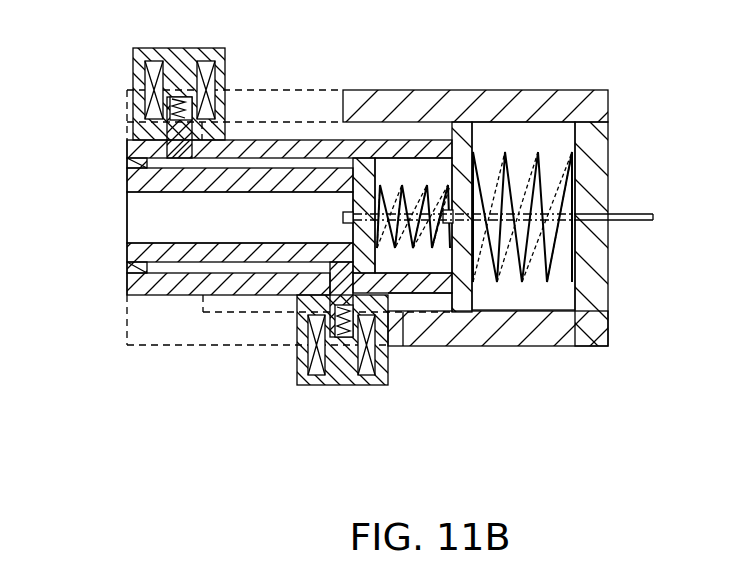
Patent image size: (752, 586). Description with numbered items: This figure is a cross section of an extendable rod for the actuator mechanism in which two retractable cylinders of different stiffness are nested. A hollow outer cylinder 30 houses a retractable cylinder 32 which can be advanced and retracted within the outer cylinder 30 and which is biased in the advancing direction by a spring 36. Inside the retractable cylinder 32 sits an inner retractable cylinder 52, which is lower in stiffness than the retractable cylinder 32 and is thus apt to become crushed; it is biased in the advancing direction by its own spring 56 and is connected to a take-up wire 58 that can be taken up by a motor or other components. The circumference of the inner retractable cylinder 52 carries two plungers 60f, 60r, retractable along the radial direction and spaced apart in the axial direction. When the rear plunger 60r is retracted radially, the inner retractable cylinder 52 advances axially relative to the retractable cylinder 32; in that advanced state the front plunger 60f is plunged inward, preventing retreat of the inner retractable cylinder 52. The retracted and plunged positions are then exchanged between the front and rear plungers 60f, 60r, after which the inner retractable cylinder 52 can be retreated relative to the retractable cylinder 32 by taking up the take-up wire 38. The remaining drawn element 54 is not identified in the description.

The outer cylinder 30 is at (522, 346).
The retractable cylinder 32 is at (419, 140).
The spring 36 is at (555, 260).
The take-up wire 38 is at (630, 213).
The inner retractable cylinder 52 is at (175, 263).
The upper guide bar 54 is at (322, 158).
The spring 56 is at (420, 248).
The take-up wire 58 is at (393, 158).
The front plunger 60f is at (170, 140).
The rear plunger 60r is at (332, 268).